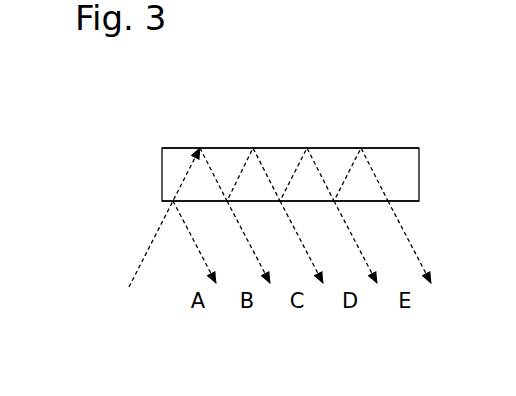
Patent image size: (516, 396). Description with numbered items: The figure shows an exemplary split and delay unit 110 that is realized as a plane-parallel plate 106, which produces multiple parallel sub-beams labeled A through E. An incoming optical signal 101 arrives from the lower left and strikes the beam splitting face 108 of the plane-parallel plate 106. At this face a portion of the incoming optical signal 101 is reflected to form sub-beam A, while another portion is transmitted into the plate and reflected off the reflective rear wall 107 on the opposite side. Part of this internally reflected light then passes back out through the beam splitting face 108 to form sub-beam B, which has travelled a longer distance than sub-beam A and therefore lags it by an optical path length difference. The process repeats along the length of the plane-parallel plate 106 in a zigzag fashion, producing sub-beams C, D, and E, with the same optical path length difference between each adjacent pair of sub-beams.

The incoming optical signal 101 is at (143, 253).
The plane-parallel plate 106 is at (157, 174).
The reflective rear wall 107 is at (233, 148).
The beam splitting face 108 is at (412, 202).
The split and delay unit 110 is at (275, 133).